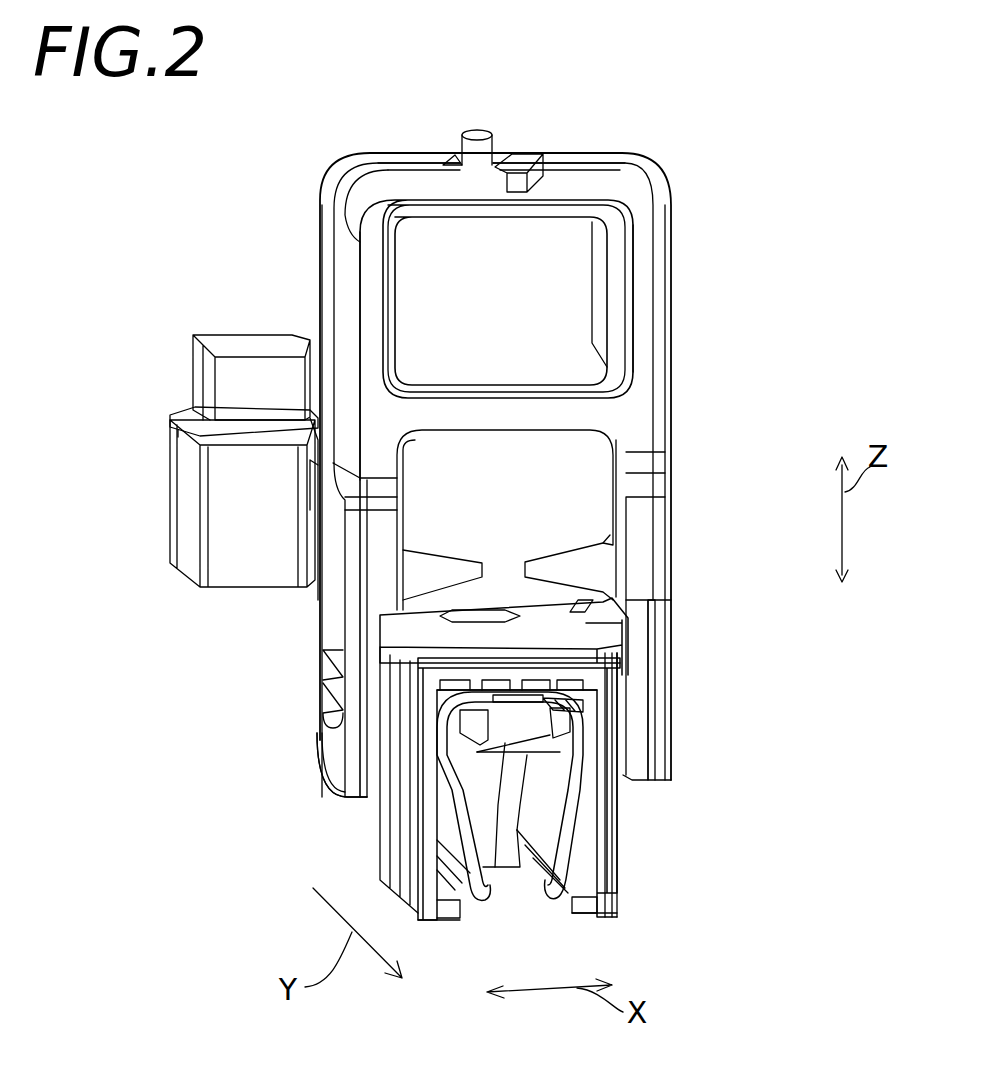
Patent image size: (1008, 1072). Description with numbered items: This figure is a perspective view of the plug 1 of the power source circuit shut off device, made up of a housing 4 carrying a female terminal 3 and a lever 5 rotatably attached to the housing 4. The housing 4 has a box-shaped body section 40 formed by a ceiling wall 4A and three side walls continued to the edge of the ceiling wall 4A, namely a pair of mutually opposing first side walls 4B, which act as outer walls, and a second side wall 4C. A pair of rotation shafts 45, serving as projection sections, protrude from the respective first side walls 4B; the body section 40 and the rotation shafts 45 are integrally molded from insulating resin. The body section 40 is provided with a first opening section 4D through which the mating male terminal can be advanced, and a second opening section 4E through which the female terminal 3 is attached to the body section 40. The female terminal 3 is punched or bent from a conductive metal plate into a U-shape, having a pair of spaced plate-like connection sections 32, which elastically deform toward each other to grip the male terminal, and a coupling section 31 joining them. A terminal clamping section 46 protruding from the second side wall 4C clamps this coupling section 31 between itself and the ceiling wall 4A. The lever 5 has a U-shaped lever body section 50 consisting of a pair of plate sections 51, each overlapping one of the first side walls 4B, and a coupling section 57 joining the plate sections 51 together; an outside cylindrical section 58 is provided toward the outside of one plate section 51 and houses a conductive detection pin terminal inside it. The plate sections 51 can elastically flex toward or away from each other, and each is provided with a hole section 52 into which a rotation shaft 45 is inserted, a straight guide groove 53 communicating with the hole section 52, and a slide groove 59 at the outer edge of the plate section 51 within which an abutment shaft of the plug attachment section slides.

The plug 1 is at (742, 444).
The female terminal 3 is at (782, 647).
The housing 4 is at (624, 803).
The ceiling wall 4A is at (557, 637).
The first side walls 4B is at (377, 840).
The second side wall 4C is at (522, 870).
The first opening section 4D is at (508, 877).
The second opening section 4E is at (597, 855).
The lever 5 is at (682, 315).
The coupling section 31 is at (617, 670).
The connection sections 32 is at (447, 738).
The body section 40 is at (620, 880).
The rotation shafts 45 is at (333, 680).
The terminal clamping section 46 is at (498, 867).
The lever body section 50 is at (767, 152).
The plate sections 51 is at (372, 299).
The hole section 52 is at (333, 713).
The straight guide groove 53 is at (333, 613).
The coupling section 57 is at (562, 177).
The outside cylindrical section 58 is at (250, 575).
The slide groove 59 is at (657, 650).